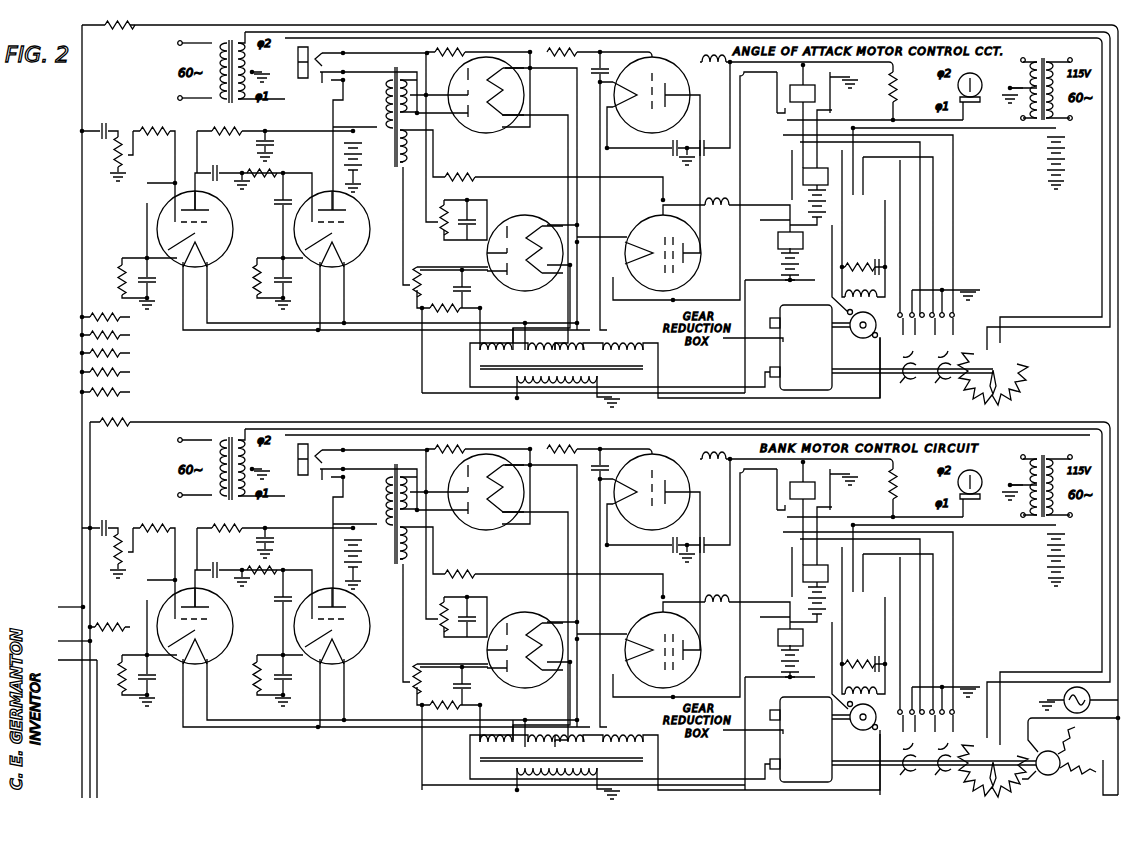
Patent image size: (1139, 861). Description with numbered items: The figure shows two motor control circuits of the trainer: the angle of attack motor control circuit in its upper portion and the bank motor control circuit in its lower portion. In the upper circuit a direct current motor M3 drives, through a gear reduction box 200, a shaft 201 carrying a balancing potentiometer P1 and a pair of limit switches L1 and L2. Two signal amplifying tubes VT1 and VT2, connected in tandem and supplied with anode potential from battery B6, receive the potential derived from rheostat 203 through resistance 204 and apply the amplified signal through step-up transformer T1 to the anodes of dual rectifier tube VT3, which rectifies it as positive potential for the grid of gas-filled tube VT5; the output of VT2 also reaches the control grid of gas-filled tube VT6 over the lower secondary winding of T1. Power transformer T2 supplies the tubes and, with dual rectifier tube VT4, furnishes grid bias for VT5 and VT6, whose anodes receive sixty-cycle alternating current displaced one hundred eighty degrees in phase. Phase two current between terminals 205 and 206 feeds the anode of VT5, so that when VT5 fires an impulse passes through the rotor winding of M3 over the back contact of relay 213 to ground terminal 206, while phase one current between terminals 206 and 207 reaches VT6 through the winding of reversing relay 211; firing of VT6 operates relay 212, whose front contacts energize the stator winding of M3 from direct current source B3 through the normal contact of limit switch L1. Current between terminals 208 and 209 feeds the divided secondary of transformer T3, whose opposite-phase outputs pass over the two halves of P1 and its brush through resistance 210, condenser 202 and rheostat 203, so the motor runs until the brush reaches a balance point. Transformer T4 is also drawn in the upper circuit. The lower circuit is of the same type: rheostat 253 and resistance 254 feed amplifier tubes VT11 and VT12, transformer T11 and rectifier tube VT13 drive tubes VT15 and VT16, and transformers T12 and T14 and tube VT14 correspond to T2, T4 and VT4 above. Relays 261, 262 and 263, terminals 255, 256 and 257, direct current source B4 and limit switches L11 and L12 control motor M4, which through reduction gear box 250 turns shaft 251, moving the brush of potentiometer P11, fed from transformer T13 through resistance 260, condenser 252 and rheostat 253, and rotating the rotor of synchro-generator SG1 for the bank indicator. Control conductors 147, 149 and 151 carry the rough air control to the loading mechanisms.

The control conductor 147 is at (79, 606).
The control conductor 149 is at (80, 661).
The control conductor 151 is at (80, 640).
The gear reduction box 200 is at (814, 390).
The shaft 201 is at (895, 374).
The condenser 202 is at (104, 128).
The rheostat 203 is at (122, 158).
The resistance 204 is at (140, 131).
The terminal 205 is at (1023, 60).
The ground terminal 206 is at (1019, 88).
The terminal 207 is at (1023, 118).
The terminal 208 is at (178, 44).
The terminal 209 is at (178, 98).
The resistance 210 is at (127, 27).
The reversing relay 211 is at (815, 97).
The relay 212 is at (803, 176).
The relay 213 is at (789, 231).
The reduction gear box 250 is at (805, 734).
The shaft 251 is at (934, 778).
The condenser 252 is at (108, 520).
The rheostat 253 is at (136, 556).
The resistance 254 is at (155, 519).
The terminal 255 is at (1006, 466).
The terminal 256 is at (1005, 484).
The terminal 257 is at (1006, 511).
The resistance 260 is at (130, 411).
The relay 261 is at (943, 469).
The relay 262 is at (925, 547).
The relay 263 is at (781, 630).
The direct current source B3 is at (1047, 150).
The source of direct current B4 is at (1037, 560).
The battery B6 is at (362, 168).
The limit switch L1 is at (905, 348).
The limit switch L2 is at (957, 341).
The limit switch L11 is at (899, 752).
The limit switch L12 is at (956, 753).
The direct current motor M3 is at (864, 338).
The motor M4 is at (856, 728).
The balancing potentiometer P1 is at (1022, 368).
The potentiometer P11 is at (993, 764).
The synchro-generator SG1 is at (1070, 756).
The step-up transformer T1 is at (390, 75).
The power transformer T2 is at (561, 375).
The transformer T3 is at (230, 42).
The transformer T4 is at (1055, 60).
The transformer T11 is at (394, 509).
The transformer T12 is at (561, 767).
The transformer T13 is at (231, 464).
The transformer T14 is at (1036, 476).
The incoming signal amplifying tube VT1 is at (232, 218).
The incoming signal amplifying tube VT2 is at (363, 253).
The dual rectifier tube VT3 is at (476, 132).
The dual rectifier tube VT4 is at (505, 220).
The gas-filled tube VT5 is at (680, 113).
The gas-filled tube VT6 is at (695, 261).
The amplifier tube VT11 is at (214, 626).
The tube VT12 is at (342, 623).
The rectifier tube VT13 is at (486, 503).
The vacuum tube VT14 is at (525, 642).
The tube VT15 is at (653, 483).
The tube VT16 is at (664, 637).